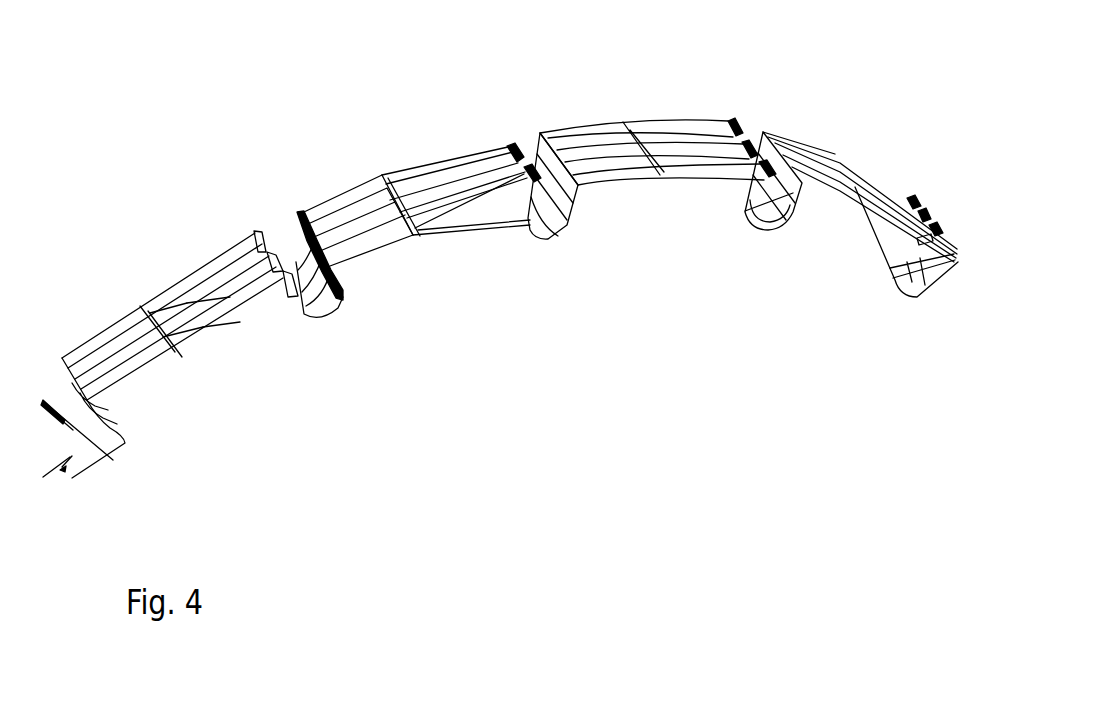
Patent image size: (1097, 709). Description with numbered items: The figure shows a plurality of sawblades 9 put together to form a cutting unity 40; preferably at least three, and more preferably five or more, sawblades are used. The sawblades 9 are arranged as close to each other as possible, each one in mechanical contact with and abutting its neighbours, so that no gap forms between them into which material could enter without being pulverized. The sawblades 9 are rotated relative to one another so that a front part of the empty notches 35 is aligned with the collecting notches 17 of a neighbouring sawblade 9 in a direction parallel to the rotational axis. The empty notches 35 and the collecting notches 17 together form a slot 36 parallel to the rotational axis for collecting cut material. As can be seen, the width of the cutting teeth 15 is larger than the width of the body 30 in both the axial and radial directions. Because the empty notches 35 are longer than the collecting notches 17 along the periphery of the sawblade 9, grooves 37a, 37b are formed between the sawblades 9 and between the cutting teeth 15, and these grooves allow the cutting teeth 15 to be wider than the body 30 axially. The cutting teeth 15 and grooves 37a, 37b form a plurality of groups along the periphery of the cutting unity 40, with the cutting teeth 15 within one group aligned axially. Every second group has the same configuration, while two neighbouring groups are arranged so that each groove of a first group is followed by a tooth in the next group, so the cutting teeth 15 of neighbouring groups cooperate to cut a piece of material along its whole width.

The cutting unity 40 is at (578, 106).
The body 30 is at (180, 288).
The groove 37a is at (250, 262).
The cutting teeth 15 is at (273, 248).
The slot 36 is at (300, 251).
The sawblade 9 is at (378, 215).
The groove 37b is at (475, 182).
The empty notch 35 is at (524, 220).
The collecting notch 17 is at (568, 202).